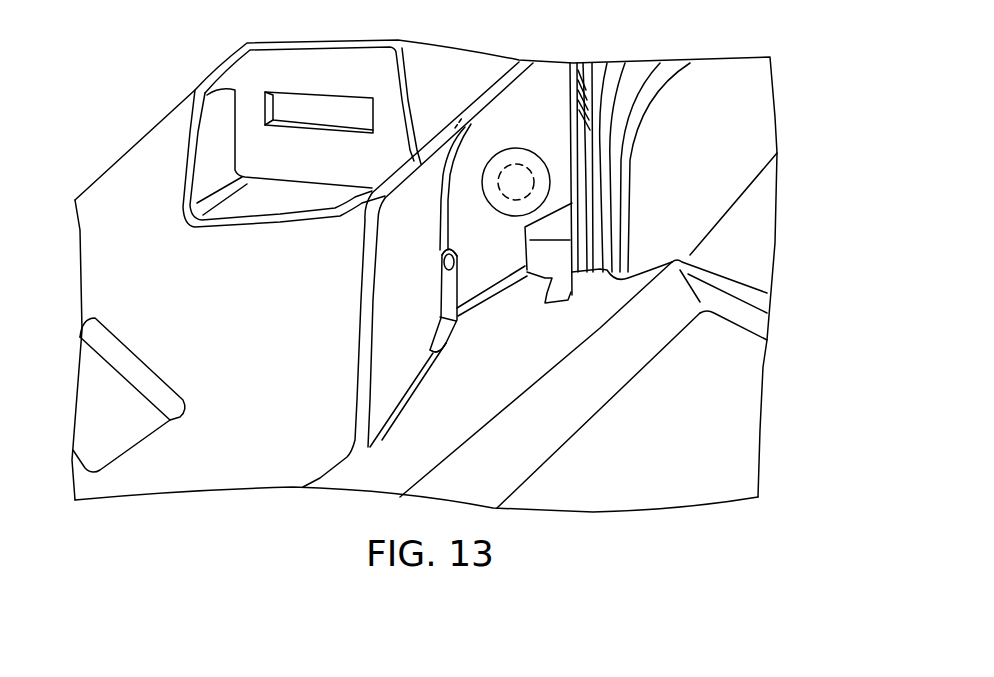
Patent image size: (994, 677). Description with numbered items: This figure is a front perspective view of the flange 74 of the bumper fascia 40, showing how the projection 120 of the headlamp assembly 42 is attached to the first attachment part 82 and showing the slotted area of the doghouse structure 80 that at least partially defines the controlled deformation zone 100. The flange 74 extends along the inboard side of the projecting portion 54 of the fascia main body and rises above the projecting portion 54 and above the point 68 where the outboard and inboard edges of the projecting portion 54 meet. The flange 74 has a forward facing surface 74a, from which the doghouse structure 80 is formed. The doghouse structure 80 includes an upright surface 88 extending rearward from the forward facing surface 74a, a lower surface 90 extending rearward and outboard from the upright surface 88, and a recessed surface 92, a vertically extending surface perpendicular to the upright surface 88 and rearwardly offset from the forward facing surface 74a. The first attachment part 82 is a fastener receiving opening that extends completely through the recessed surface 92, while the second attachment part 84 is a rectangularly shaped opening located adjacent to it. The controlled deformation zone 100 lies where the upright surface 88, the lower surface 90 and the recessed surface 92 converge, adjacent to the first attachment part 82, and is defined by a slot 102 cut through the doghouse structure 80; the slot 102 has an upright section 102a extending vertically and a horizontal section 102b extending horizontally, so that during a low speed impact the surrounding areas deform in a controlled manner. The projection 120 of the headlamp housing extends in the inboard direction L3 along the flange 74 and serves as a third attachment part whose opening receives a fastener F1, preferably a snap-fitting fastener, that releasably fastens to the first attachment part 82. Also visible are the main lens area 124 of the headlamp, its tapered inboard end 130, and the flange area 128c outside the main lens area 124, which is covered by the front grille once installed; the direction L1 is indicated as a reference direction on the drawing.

The bumper fascia 40 is at (167, 499).
The headlamp assembly 42 is at (785, 117).
The projecting portion 54 is at (717, 450).
The point 68 is at (710, 330).
The flange 74 is at (131, 473).
The forward facing surface 74a is at (442, 83).
The doghouse structure 80 is at (483, 382).
The first attachment part 82 is at (524, 175).
The second attachment part 84 is at (323, 122).
The upright surface 88 is at (400, 263).
The lower surface 90 is at (498, 352).
The recessed surface 92 is at (470, 218).
The controlled deformation zone 100 is at (481, 328).
The slot 102 is at (440, 317).
The upright section 102a is at (452, 253).
The horizontal section 102b is at (423, 329).
The projection 120 is at (557, 223).
The main lens area 124 is at (740, 238).
The flange area 128c is at (727, 97).
The tapered inboard end 130 is at (697, 253).
The fastener F1 is at (488, 187).
The direction L1 is at (615, 574).
The inboard direction L3 is at (312, 547).